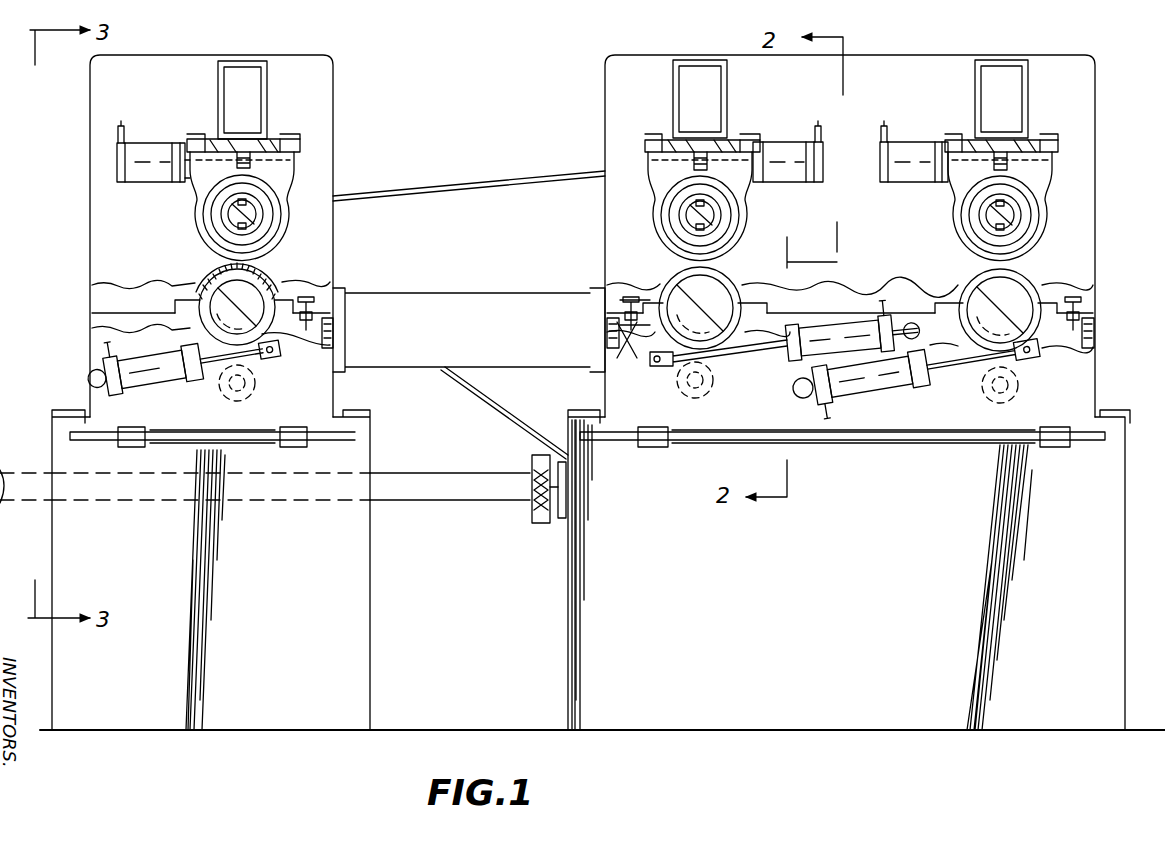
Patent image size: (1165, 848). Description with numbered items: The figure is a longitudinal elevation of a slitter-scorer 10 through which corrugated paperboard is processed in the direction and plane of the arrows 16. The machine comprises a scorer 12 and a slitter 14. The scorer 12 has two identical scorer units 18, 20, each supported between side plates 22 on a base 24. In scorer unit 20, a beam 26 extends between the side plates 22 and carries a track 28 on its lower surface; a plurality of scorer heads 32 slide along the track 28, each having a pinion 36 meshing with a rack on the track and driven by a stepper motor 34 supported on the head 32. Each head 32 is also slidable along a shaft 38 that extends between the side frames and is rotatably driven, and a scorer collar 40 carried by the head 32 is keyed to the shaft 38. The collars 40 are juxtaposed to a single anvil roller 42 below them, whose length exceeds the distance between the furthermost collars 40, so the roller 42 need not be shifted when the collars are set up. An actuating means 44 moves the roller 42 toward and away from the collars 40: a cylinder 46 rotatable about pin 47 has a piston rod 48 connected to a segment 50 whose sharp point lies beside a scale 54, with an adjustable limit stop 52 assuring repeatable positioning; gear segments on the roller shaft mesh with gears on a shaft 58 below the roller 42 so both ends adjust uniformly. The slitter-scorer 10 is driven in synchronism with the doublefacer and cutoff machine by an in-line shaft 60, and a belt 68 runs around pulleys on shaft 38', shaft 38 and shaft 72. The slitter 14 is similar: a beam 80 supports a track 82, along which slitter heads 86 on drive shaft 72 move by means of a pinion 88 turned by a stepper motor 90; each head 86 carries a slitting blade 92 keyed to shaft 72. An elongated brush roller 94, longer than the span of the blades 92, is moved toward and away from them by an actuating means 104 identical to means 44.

The slitter-scorer 10 is at (328, 742).
The scorer 12 is at (928, 10).
The slitter 14 is at (258, 50).
The arrows 16 is at (14, 262).
The scorer unit 18 is at (942, 229).
The scorer unit 20 is at (752, 233).
The side plates 22 is at (1080, 182).
The base 24 is at (922, 571).
The beam 26 is at (670, 88).
The track 28 is at (688, 146).
The scorer heads 32 is at (648, 156).
The stepper motor 34 is at (790, 148).
The pinion 36 is at (672, 165).
The shaft 38 is at (666, 215).
The shaft 38' is at (962, 215).
The scorer collar 40 is at (746, 200).
The anvil roller 42 is at (728, 284).
The actuating means 44 is at (665, 372).
The cylinder 46 is at (840, 318).
The pin 47 is at (918, 322).
The piston rod 48 is at (730, 355).
The segment 50 is at (701, 365).
The adjustable limit stop 52 is at (606, 316).
The scale 54 is at (612, 336).
The shaft 58 is at (692, 388).
The in-line shaft 60 is at (428, 476).
The belt 68 is at (444, 195).
The shaft 72 is at (236, 217).
The beam 80 is at (267, 96).
The track 82 is at (228, 146).
The slitter heads 86 is at (305, 144).
The pinion 88 is at (278, 176).
The stepper motor 90 is at (158, 148).
The slitting blade 92 is at (190, 236).
The roller 94 is at (266, 272).
The actuating means 104 is at (175, 380).